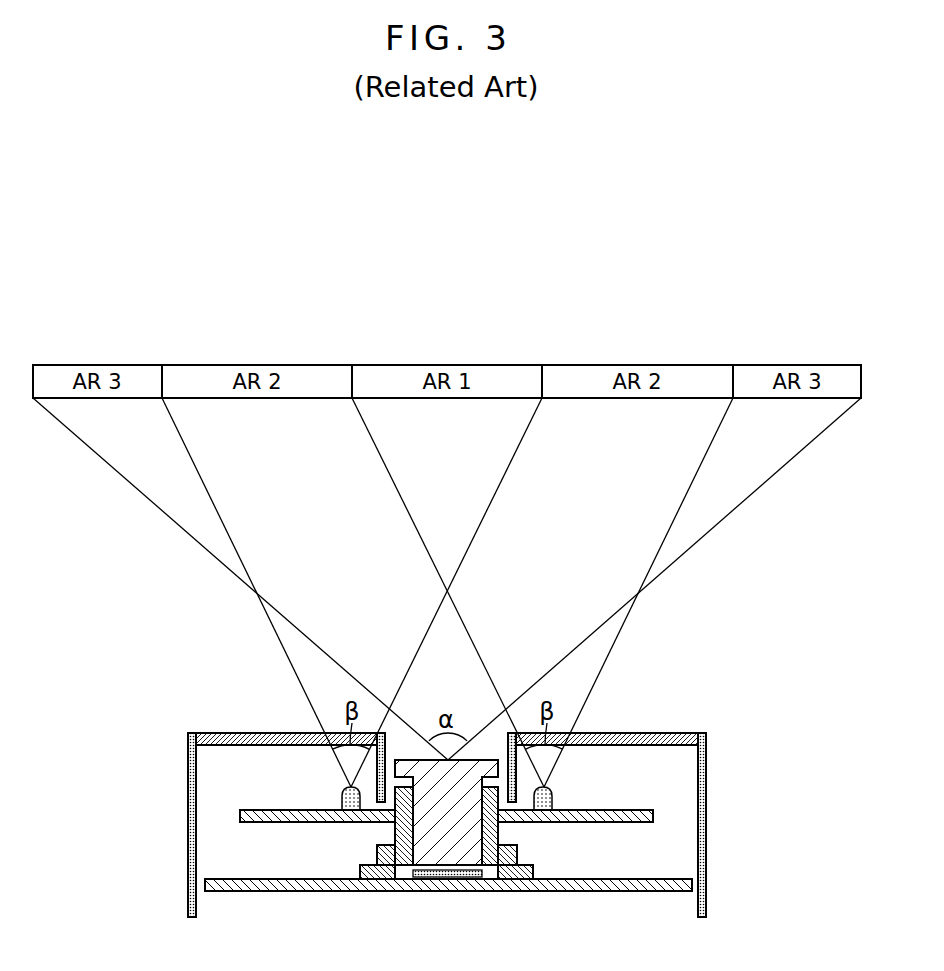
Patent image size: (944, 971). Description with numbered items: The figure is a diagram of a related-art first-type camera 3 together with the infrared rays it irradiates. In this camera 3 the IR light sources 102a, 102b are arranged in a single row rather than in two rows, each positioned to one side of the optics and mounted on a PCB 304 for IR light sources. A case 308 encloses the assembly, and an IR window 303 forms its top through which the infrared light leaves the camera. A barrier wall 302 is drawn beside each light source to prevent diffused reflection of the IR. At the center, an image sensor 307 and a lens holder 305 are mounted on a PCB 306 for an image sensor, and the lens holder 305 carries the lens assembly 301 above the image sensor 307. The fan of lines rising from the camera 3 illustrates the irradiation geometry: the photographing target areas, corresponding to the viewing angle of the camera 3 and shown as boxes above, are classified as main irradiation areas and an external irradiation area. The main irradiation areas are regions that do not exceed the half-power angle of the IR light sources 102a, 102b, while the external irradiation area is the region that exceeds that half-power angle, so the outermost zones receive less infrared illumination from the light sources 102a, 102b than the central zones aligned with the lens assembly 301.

The first-type camera 3 is at (722, 679).
The lens assembly 301 is at (465, 827).
The barrier wall 302 is at (517, 847).
The IR window 303 is at (230, 733).
The PCB for IR light sources 304 is at (588, 822).
The lens holder 305 is at (377, 878).
The PCB for an image sensor 306 is at (590, 891).
The image sensor 307 is at (448, 879).
The case 308 is at (188, 836).
The IR light source 102a is at (346, 792).
The IR light source 102b is at (548, 792).